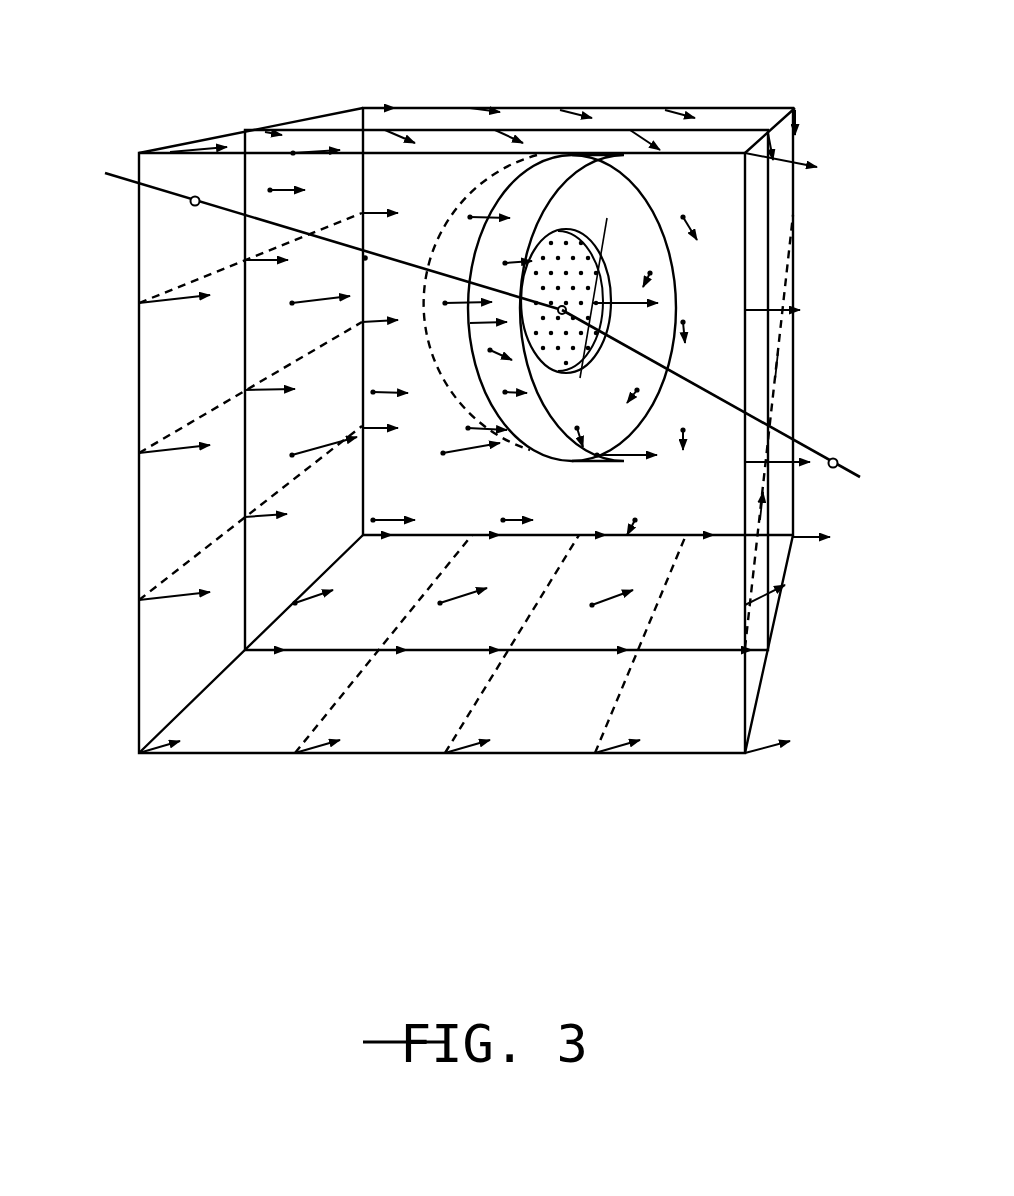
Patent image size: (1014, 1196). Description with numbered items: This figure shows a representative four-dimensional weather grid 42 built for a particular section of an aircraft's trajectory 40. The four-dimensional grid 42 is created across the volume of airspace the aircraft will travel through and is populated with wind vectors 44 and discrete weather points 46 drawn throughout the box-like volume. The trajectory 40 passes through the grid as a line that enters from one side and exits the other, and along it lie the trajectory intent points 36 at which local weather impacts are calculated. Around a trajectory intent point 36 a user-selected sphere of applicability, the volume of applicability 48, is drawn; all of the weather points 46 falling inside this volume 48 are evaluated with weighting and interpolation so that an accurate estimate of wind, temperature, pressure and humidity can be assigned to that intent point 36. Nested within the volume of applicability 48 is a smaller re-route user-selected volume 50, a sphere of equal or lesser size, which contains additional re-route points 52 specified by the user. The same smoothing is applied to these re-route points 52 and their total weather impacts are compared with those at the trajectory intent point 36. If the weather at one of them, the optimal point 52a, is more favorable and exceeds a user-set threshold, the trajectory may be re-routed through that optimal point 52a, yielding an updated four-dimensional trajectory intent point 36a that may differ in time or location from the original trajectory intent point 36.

The trajectory intent point 36 is at (196, 196).
The updated 4D trajectory intent point 36a is at (838, 461).
The trajectory 40 is at (365, 258).
The 4D grid 42 is at (583, 85).
The wind vectors 44 is at (490, 206).
The discrete weather points 46 is at (470, 217).
The volume of applicability 48 is at (728, 338).
The re-route user-selected volume 50 is at (660, 304).
The re-route points 52 is at (563, 237).
The optimal point 52a is at (567, 352).